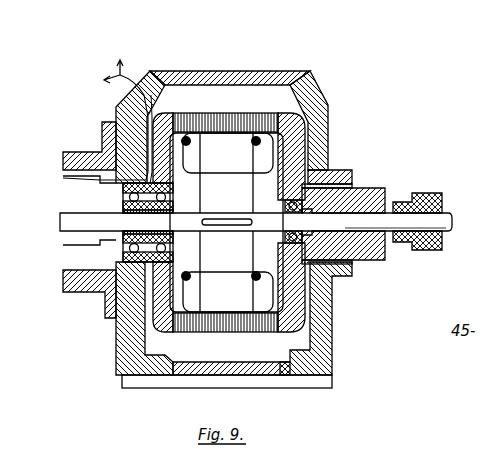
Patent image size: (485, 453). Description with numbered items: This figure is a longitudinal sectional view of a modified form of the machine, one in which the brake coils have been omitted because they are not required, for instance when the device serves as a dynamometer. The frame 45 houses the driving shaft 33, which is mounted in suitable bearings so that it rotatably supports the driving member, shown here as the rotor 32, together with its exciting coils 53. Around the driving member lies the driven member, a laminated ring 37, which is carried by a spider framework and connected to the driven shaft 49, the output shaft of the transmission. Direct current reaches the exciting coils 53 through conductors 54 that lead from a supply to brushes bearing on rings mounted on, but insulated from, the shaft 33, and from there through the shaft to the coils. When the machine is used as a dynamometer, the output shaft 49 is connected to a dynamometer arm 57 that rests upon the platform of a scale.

The rotor 32 is at (226, 222).
The driving shaft 33 is at (64, 229).
The laminated ring 37 is at (245, 104).
The frame 45 is at (330, 322).
The driven shaft 49 is at (364, 217).
The exciting coils 53 is at (193, 160).
The conductors 54 is at (113, 68).
The dynamometer arm 57 is at (433, 195).